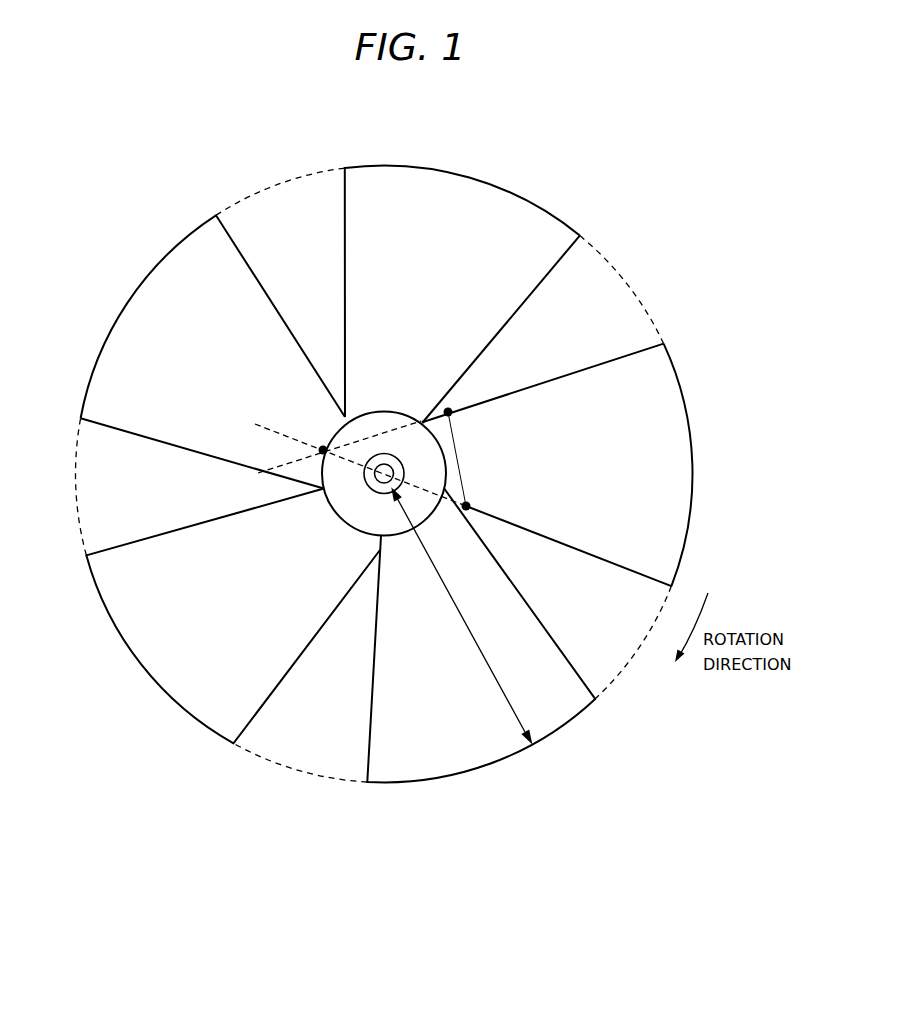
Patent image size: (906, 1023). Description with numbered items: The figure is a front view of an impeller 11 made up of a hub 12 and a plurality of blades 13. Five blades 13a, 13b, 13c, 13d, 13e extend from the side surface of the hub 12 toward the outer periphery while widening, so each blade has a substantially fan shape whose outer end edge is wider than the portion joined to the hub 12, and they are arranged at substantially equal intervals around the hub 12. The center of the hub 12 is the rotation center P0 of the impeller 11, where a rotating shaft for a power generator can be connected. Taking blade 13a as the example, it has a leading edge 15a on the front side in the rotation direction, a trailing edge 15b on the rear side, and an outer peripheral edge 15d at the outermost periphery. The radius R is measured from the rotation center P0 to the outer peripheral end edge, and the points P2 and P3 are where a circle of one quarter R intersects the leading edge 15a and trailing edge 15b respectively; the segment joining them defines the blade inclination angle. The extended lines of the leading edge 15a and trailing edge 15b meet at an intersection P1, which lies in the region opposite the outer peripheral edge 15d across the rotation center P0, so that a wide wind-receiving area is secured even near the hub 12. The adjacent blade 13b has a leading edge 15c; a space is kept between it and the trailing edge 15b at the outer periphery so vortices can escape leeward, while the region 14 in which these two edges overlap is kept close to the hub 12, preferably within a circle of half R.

The impeller 11 is at (62, 793).
The hub 12 is at (370, 517).
The blades 13 is at (603, 168).
The blade 13a is at (597, 465).
The blade 13b is at (482, 293).
The blade 13c is at (157, 293).
The blade 13d is at (182, 673).
The blade 13e is at (457, 762).
The region 14 is at (424, 414).
The leading edge 15a is at (590, 556).
The trailing edge 15b is at (585, 369).
The leading edge 15c is at (544, 277).
The outer peripheral edge 15d is at (689, 540).
The rotation center P0 is at (339, 491).
The intersection P1 is at (309, 436).
The intersection P2 is at (477, 504).
The intersection P3 is at (464, 424).
The radius R is at (461, 615).